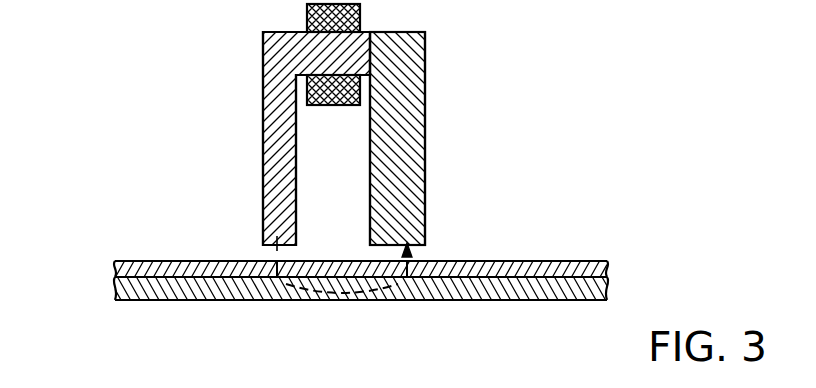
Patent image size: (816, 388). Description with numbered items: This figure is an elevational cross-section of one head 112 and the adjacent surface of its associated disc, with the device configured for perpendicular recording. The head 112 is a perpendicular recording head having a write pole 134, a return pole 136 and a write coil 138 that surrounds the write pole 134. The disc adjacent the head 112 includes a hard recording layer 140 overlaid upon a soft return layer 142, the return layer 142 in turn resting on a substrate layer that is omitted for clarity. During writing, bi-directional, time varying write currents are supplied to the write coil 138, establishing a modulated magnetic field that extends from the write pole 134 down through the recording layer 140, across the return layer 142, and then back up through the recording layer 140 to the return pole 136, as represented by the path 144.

The head 112 is at (477, 86).
The write pole 134 is at (275, 153).
The return pole 136 is at (413, 148).
The write coil 138 is at (305, 22).
The hard recording layer 140 is at (197, 265).
The soft return layer 142 is at (160, 287).
The path 144 is at (343, 300).